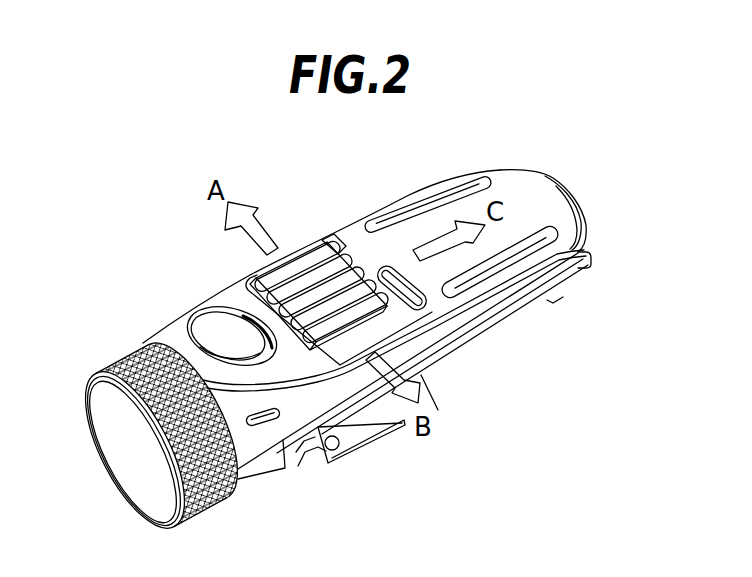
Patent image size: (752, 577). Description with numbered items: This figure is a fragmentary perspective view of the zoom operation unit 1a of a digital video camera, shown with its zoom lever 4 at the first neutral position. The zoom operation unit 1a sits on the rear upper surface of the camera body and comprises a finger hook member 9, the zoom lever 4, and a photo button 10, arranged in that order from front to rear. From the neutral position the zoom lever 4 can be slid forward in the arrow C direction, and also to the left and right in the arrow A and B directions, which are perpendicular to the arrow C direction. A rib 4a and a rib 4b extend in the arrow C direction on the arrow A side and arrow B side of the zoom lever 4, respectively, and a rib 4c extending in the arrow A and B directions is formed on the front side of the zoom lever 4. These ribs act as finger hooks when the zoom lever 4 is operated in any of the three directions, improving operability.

The zoom operation unit 1a is at (523, 185).
The zoom lever 4 is at (401, 287).
The rib 4a is at (320, 241).
The rib 4b is at (393, 262).
The rib 4c is at (336, 236).
The finger hook member 9 is at (460, 187).
The photo button 10 is at (226, 318).